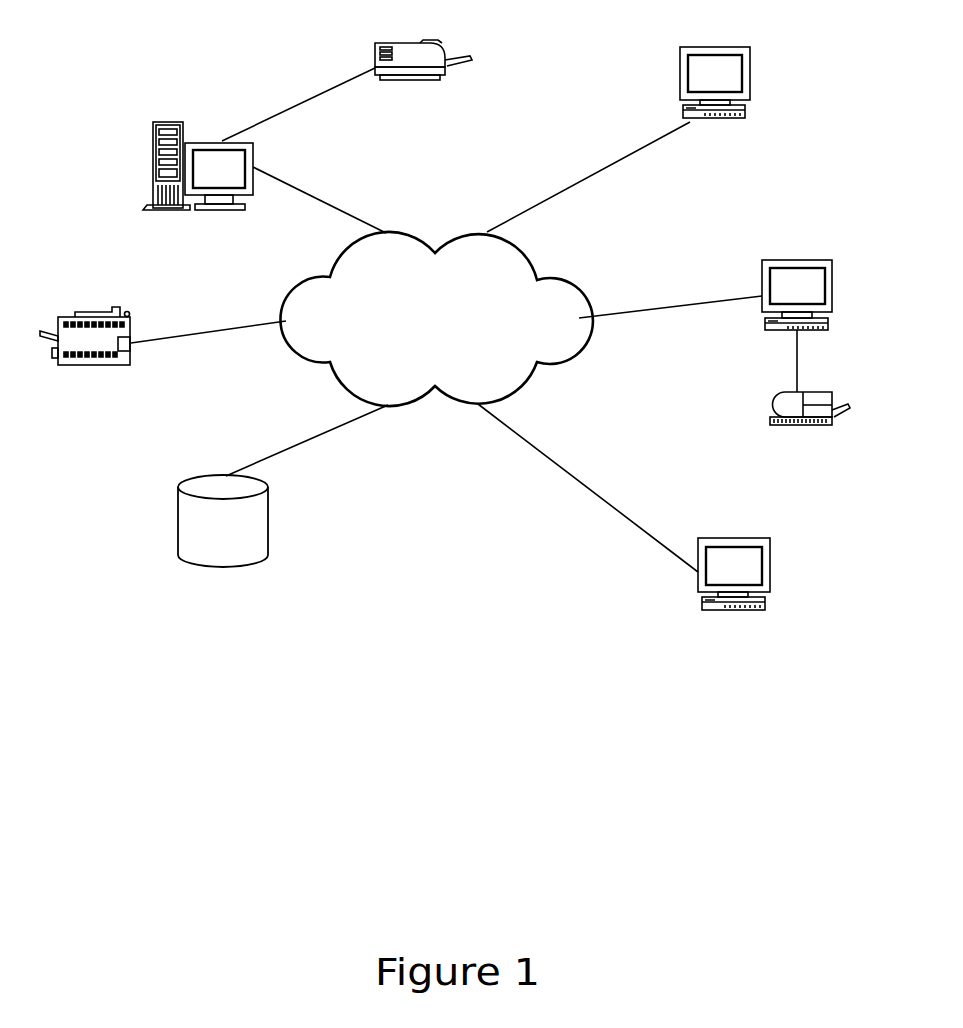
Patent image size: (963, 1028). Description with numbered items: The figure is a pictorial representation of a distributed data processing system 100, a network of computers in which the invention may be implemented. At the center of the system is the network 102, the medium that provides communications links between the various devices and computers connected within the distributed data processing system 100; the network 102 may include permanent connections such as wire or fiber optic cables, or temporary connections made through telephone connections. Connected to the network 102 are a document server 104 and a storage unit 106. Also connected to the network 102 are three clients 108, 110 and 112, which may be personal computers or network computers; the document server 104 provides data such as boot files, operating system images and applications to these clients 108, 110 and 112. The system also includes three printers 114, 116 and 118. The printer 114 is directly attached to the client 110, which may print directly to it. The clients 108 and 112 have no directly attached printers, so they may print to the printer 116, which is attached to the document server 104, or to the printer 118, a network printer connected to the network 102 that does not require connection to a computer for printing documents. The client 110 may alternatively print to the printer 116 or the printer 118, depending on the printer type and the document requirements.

The distributed data processing system 100 is at (470, 907).
The network 102 is at (452, 331).
The document server 104 is at (212, 236).
The storage unit 106 is at (234, 607).
The client 108 is at (733, 37).
The client 110 is at (812, 246).
The client 112 is at (748, 526).
The printer 114 is at (812, 456).
The printer 116 is at (425, 110).
The printer 118 is at (108, 394).